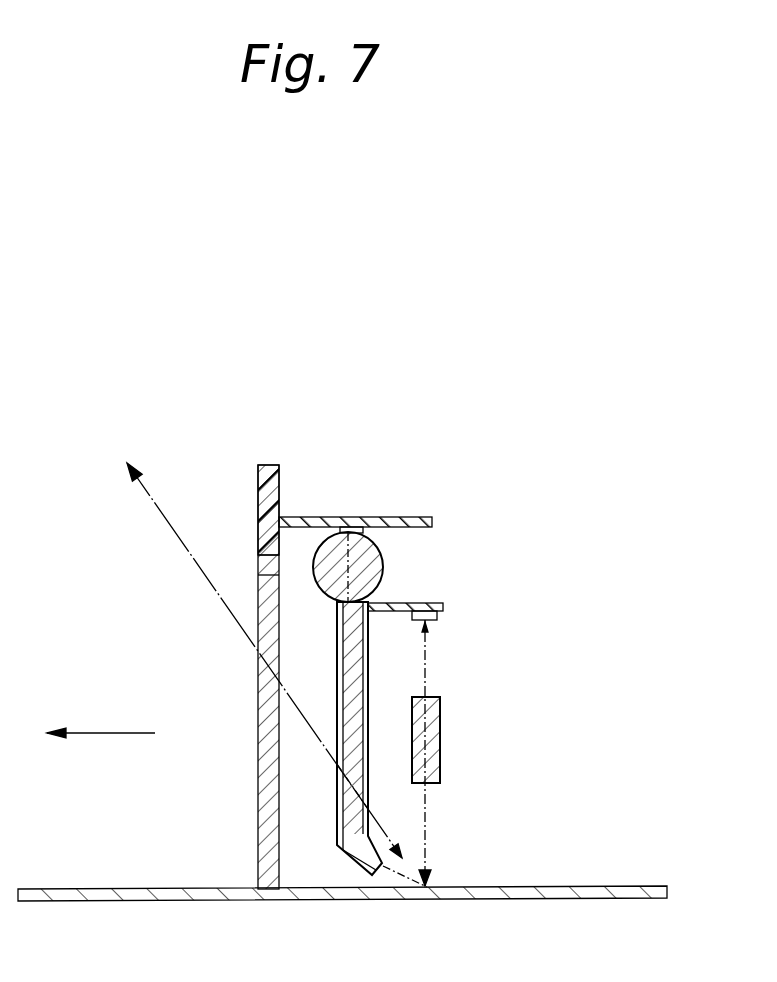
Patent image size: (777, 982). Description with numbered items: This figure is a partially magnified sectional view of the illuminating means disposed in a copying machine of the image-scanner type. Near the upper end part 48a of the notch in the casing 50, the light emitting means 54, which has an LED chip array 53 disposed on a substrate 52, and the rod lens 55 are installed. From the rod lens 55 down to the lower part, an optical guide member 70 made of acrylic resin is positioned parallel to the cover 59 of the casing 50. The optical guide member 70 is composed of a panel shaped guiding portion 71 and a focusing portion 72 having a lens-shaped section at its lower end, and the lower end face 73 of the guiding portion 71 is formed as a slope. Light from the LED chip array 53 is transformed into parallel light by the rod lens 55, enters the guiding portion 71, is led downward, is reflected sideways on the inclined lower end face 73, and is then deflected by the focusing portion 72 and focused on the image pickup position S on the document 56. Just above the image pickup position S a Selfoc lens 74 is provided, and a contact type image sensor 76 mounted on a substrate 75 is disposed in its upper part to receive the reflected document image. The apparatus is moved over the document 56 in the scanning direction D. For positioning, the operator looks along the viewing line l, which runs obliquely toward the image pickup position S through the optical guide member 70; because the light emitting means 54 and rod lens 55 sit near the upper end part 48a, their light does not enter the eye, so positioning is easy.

The upper end part of the notch 48a is at (265, 573).
The casing 50 is at (262, 515).
The substrate 52 is at (406, 517).
The LED chip array 53 is at (362, 494).
The light emitting means 54 is at (359, 465).
The rod lens 55 is at (383, 565).
The document 56 is at (617, 886).
The cover 59 is at (262, 710).
The optical guide member 70 is at (258, 738).
The guiding portion 71 is at (350, 800).
The focusing portion 72 is at (340, 838).
The lower end face 73 is at (355, 870).
The Selfoc lens 74 is at (442, 740).
The substrate 75 is at (440, 604).
The contact type image sensor 76 is at (438, 617).
The image pickup position S is at (430, 885).
The scanning direction D is at (108, 733).
The viewing line l is at (188, 547).